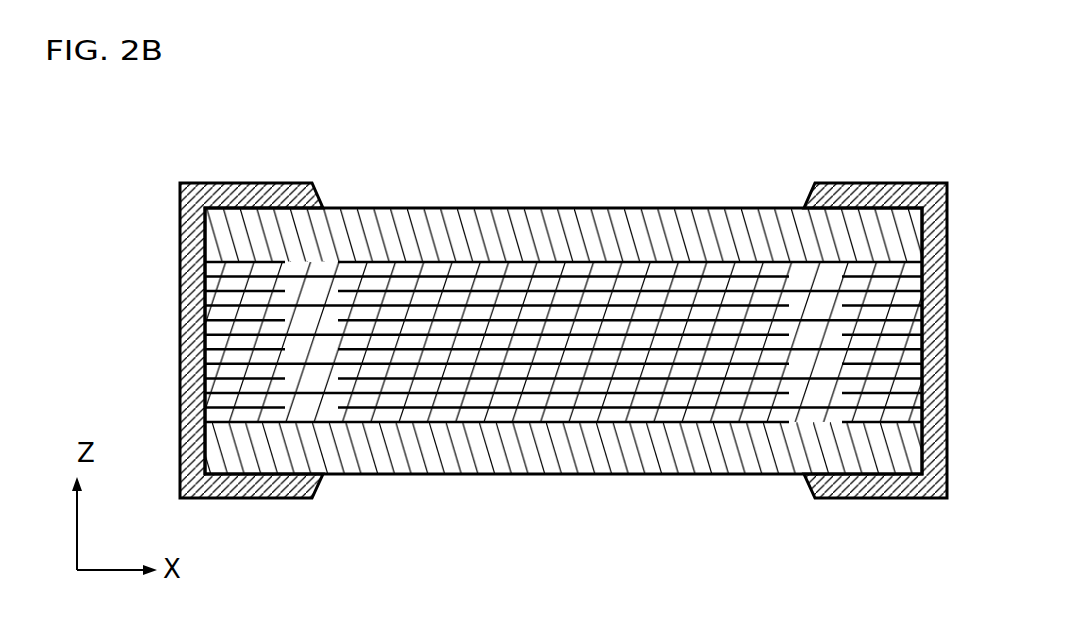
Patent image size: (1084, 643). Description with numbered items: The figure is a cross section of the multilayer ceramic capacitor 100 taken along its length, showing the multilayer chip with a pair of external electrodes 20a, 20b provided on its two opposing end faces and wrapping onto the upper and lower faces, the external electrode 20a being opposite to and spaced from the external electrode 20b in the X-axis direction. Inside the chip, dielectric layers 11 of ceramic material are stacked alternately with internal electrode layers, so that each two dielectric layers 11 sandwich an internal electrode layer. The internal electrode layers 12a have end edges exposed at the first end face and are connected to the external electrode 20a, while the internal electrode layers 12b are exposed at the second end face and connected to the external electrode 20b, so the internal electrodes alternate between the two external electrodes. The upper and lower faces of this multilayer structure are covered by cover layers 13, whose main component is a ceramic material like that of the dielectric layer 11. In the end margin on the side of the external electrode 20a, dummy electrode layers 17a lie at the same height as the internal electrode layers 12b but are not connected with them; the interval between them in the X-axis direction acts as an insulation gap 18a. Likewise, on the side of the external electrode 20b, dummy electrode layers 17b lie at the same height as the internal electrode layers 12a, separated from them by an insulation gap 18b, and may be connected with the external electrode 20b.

The multilayer ceramic capacitor 100 is at (815, 135).
The dielectric layer 11 is at (657, 410).
The internal electrode layer 12a is at (493, 395).
The internal electrode layer 12b is at (583, 383).
The cover layer 13 is at (440, 233).
The dummy electrode layer 17a is at (252, 378).
The dummy electrode layer 17b is at (870, 393).
The insulation gap 18a is at (322, 377).
The insulation gap 18b is at (808, 392).
The external electrode 20a is at (188, 183).
The external electrode 20b is at (915, 183).